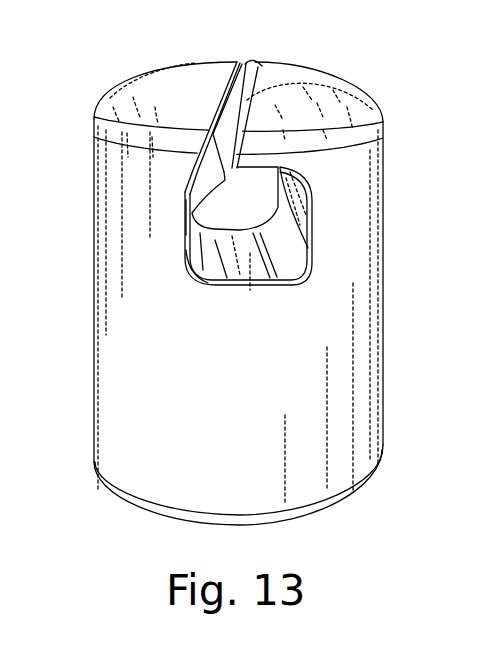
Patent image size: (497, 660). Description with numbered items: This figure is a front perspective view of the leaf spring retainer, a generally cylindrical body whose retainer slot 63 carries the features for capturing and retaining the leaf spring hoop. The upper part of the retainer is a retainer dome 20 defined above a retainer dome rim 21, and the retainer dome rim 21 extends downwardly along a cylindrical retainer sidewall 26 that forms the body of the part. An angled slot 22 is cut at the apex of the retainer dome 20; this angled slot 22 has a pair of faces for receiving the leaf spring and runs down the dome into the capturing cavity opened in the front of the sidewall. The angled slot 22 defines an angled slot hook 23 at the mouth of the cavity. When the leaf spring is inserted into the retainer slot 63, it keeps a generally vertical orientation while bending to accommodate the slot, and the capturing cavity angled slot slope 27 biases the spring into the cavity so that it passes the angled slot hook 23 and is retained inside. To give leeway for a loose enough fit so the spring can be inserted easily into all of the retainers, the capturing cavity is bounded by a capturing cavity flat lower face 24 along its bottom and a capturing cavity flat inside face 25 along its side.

The retainer dome 20 is at (183, 91).
The retainer dome rim 21 is at (97, 117).
The angled slot 22 is at (240, 100).
The angled slot hook 23 is at (222, 195).
The capturing cavity flat lower face 24 is at (250, 268).
The capturing cavity flat inside face 25 is at (293, 212).
The cylindrical retainer sidewall 26 is at (92, 350).
The capturing cavity angled slot slope 27 is at (199, 266).
The retainer slot 63 is at (185, 214).